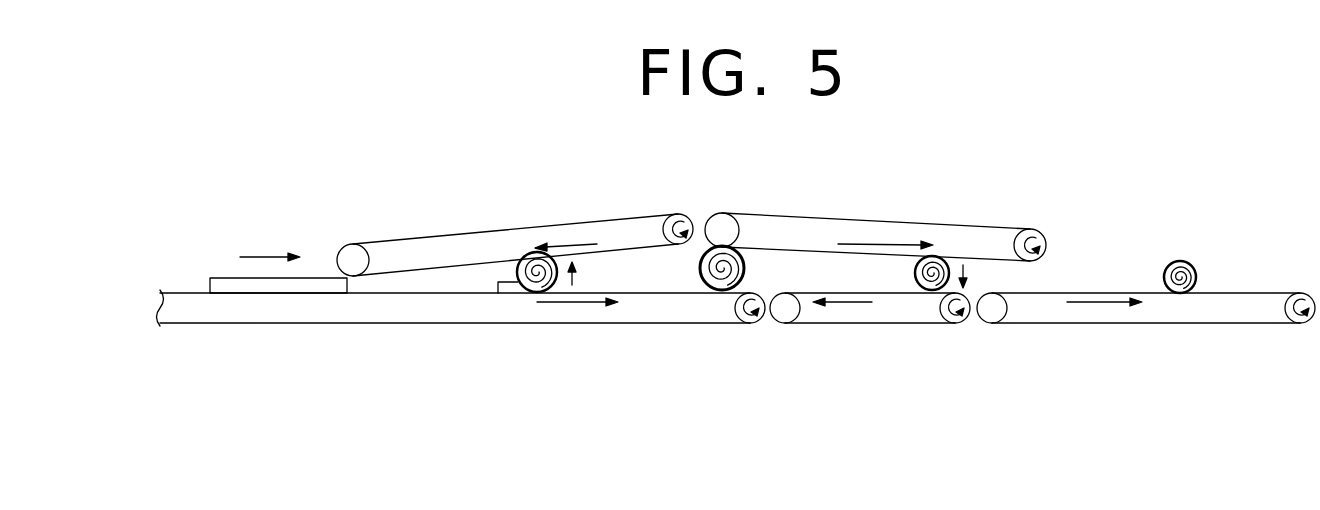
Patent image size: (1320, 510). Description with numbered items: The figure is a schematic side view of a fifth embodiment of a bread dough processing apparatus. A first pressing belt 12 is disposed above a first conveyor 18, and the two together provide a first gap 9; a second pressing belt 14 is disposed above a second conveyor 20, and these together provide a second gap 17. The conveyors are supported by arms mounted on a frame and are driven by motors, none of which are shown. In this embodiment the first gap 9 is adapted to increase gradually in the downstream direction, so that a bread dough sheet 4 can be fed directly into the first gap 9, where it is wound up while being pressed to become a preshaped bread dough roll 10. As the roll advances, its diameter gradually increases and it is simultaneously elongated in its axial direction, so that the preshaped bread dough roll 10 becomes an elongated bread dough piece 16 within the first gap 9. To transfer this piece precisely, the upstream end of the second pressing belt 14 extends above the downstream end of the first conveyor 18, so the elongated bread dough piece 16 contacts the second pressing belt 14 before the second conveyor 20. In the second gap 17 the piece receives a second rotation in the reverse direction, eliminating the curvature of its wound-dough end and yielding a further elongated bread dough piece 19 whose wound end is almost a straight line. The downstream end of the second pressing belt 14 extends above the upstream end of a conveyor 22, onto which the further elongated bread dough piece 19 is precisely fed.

The bread dough sheet 4 is at (225, 278).
The first gap 9 is at (630, 262).
The preshaped bread dough roll 10 is at (497, 283).
The first pressing belt 12 is at (413, 237).
The second pressing belt 14 is at (780, 216).
The elongated bar-shaped bread dough piece 16 is at (704, 270).
The second gap 17 is at (794, 268).
The first conveyor 18 is at (450, 324).
The further elongated bread dough piece 19 is at (912, 284).
The second conveyor 20 is at (838, 324).
The conveyor 22 is at (1197, 324).